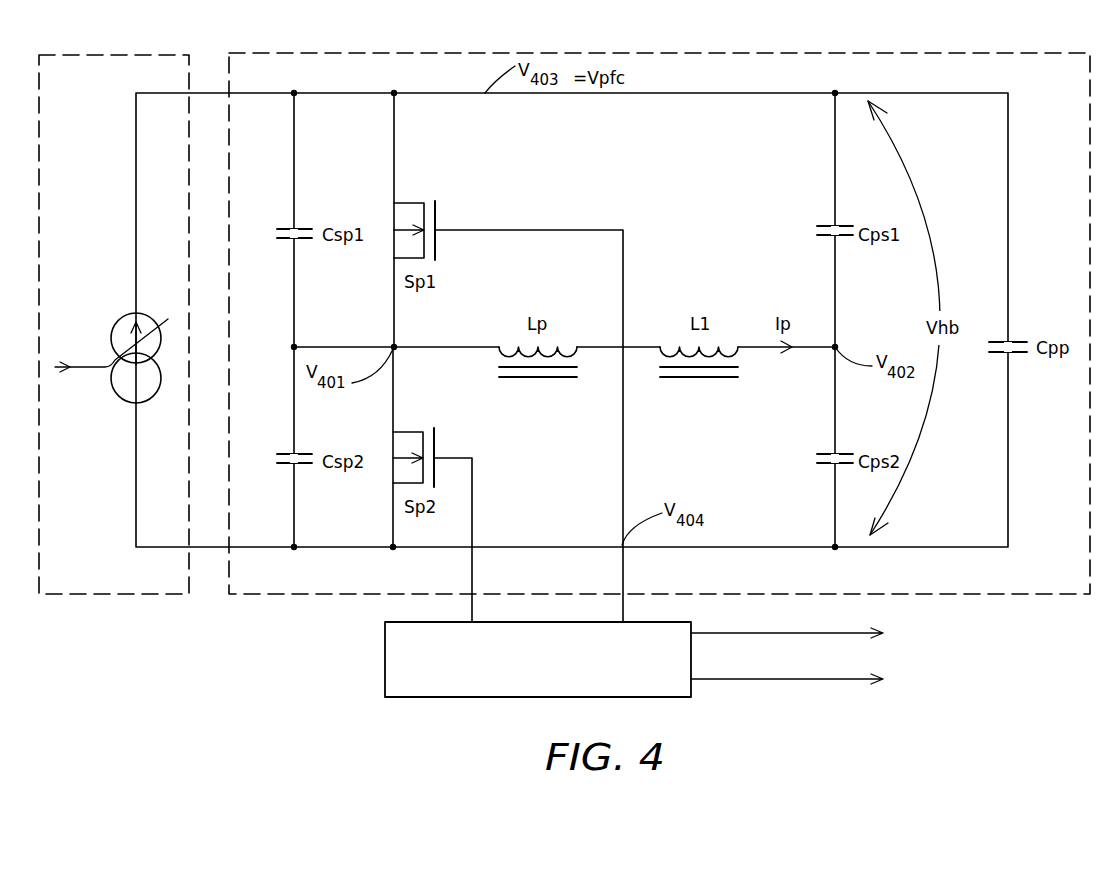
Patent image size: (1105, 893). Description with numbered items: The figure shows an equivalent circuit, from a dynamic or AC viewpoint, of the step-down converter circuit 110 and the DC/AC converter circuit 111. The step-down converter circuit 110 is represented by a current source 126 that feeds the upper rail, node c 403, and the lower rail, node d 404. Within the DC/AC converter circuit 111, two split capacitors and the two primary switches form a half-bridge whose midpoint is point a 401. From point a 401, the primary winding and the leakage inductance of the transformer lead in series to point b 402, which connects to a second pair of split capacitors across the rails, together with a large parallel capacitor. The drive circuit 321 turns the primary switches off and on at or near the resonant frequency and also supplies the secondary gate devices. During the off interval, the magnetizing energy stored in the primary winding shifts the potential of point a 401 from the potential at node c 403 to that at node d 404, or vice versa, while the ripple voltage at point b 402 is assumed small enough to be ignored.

The step-down converter circuit 110 is at (128, 598).
The DC/AC converter circuit 111 is at (278, 598).
The current source 126 is at (95, 366).
The drive circuit 321 is at (385, 697).
The point a 401 is at (394, 347).
The point b 402 is at (835, 347).
The node c 403 is at (394, 92).
The node d 404 is at (393, 549).